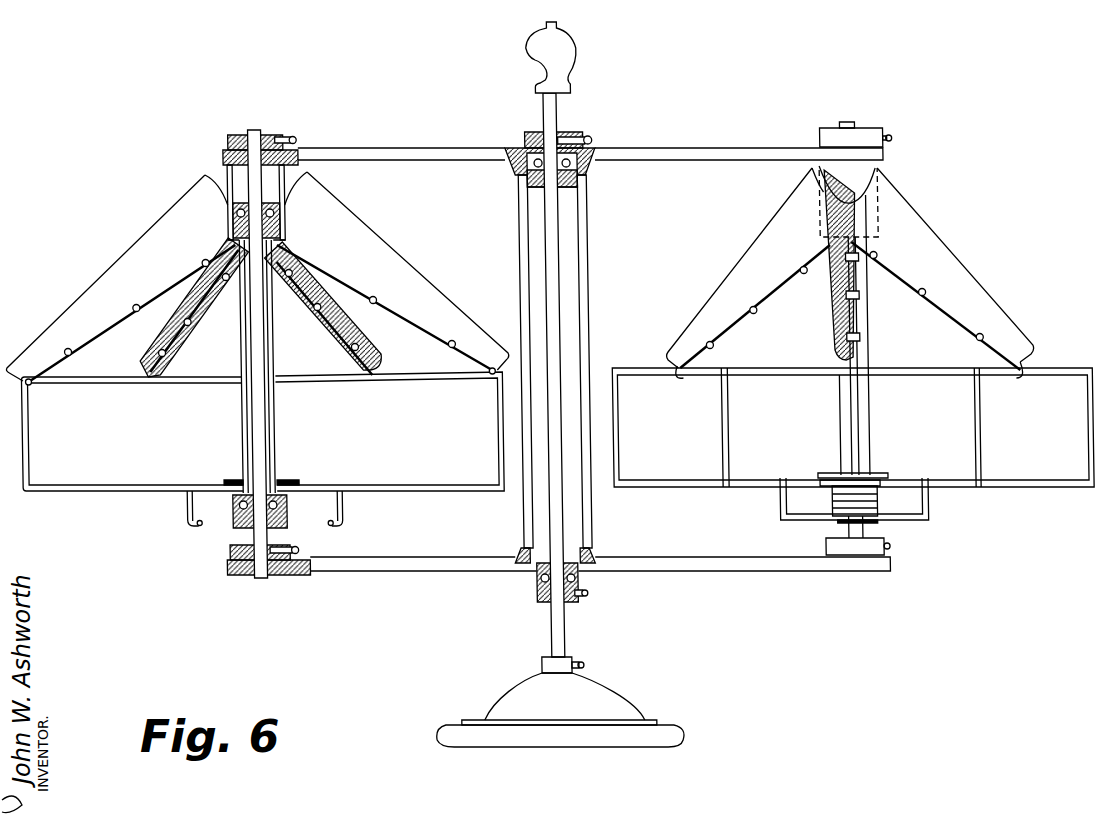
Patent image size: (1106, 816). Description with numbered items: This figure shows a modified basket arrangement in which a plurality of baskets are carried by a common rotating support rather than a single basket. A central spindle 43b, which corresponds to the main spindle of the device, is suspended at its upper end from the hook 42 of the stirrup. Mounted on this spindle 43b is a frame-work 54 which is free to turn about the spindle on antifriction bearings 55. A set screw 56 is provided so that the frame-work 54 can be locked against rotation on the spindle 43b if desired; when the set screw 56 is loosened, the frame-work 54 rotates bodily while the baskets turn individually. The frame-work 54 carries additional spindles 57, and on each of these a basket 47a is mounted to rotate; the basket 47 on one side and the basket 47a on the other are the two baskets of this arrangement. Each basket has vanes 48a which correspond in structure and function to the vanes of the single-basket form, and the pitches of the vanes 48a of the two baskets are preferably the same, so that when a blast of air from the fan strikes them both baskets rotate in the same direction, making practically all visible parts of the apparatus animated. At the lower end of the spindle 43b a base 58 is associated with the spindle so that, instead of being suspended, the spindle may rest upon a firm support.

The hook 42 is at (551, 50).
The spindle 43b is at (561, 110).
The basket 47 is at (91, 492).
The basket 47a is at (958, 488).
The vanes 48a is at (135, 245).
The frame-work 54 is at (714, 565).
The antifriction bearings 55 is at (583, 170).
The set screw 56 is at (596, 138).
The additional spindles 57 is at (258, 578).
The base 58 is at (649, 730).